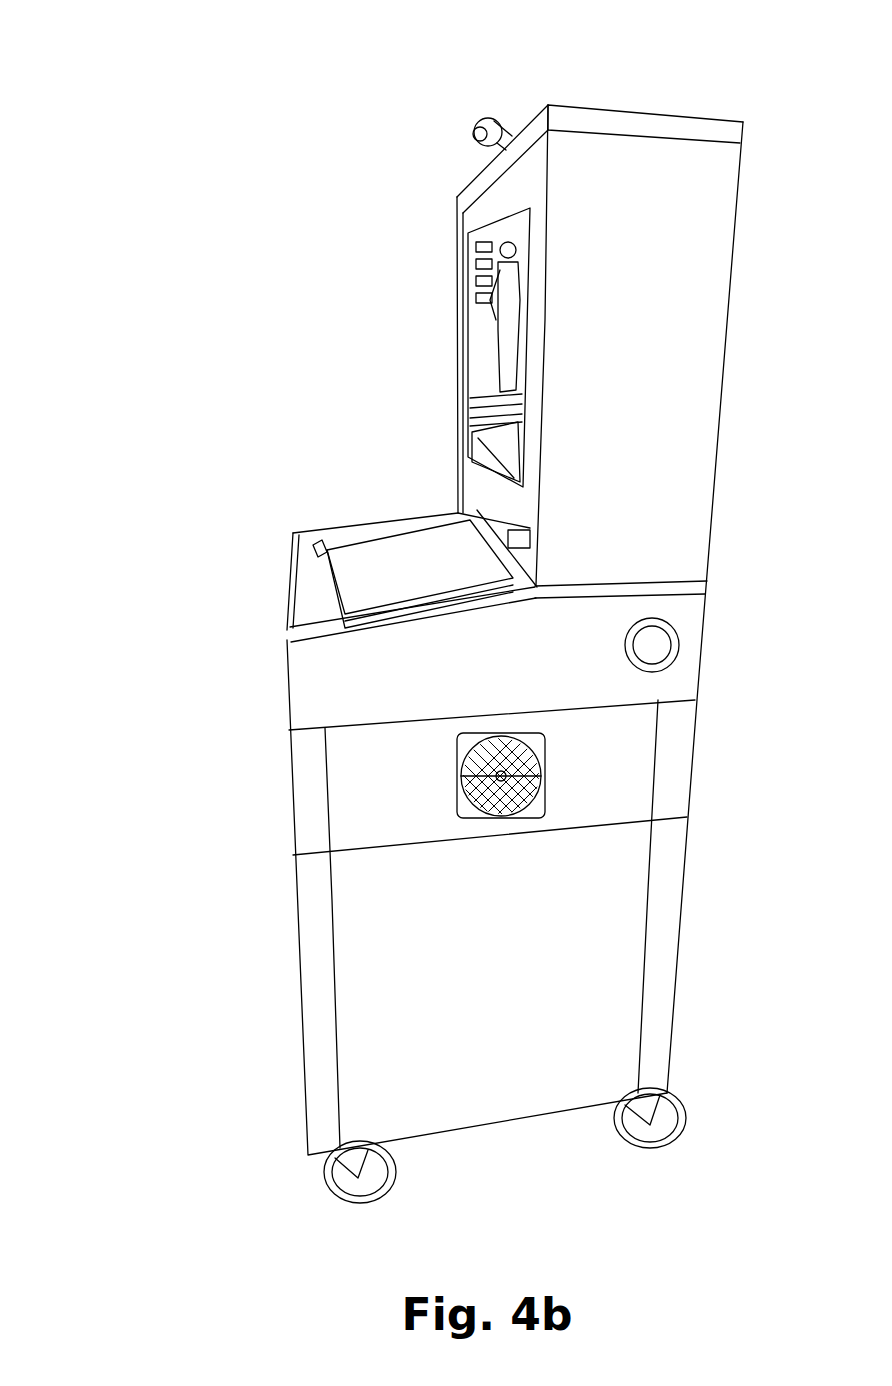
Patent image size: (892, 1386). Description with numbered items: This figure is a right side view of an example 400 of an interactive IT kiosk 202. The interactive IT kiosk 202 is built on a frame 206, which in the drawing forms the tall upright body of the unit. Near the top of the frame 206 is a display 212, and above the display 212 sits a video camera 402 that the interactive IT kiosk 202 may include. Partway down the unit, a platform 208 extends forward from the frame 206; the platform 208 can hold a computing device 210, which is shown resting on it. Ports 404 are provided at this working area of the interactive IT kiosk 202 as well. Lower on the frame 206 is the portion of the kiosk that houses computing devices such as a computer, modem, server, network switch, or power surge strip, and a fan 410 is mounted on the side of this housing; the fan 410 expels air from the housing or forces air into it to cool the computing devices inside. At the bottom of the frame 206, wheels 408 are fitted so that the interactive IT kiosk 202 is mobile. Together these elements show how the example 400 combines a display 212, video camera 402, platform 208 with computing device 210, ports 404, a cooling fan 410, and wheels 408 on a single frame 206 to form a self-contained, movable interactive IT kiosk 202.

The example 400 is at (222, 37).
The interactive IT kiosk 202 is at (405, 127).
The video camera 402 is at (503, 120).
The display 212 is at (470, 356).
The ports 404 is at (317, 543).
The platform 208 is at (318, 587).
The computing device 210 is at (392, 579).
The frame 206 is at (692, 743).
The fan 410 is at (537, 797).
The wheels 408 is at (642, 1147).